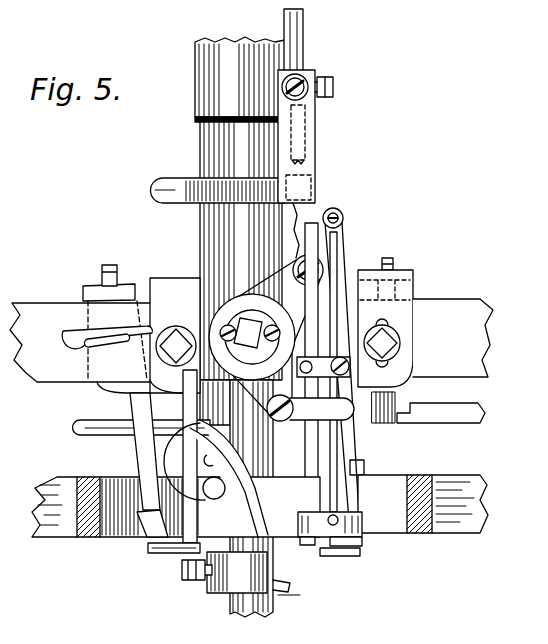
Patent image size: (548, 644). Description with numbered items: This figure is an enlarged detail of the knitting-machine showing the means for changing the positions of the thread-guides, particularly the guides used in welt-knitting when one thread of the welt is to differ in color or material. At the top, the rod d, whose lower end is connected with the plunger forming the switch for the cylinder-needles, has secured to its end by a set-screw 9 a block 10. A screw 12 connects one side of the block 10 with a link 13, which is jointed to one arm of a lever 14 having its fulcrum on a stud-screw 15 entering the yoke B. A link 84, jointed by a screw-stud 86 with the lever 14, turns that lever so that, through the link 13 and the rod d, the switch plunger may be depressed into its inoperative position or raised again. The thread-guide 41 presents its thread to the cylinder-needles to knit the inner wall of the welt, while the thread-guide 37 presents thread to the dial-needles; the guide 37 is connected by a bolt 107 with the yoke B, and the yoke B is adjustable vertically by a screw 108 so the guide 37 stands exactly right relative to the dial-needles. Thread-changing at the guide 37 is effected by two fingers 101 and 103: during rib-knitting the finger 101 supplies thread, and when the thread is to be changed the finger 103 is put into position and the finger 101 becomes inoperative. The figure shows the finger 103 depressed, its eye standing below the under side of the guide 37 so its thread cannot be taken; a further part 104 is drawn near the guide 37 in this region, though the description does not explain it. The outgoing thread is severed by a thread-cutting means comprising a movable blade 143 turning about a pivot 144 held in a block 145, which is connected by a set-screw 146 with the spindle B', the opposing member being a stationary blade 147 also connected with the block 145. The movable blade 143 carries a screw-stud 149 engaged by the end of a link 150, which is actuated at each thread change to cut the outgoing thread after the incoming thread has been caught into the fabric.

The rod d is at (305, 35).
The set-screw 9 is at (334, 86).
The block 10 is at (315, 78).
The screw 12 is at (303, 95).
The link 13 is at (308, 163).
The lever 14 is at (266, 334).
The stud-screw 15 is at (244, 318).
The thread-guide 37 is at (362, 540).
The thread-guide 41 is at (160, 538).
The link 84 is at (354, 418).
The screw-stud 86 is at (283, 421).
The finger 101 is at (346, 282).
The finger 103 is at (318, 473).
The bracket 104 is at (362, 556).
The bolt 107 is at (394, 345).
The screw 108 is at (394, 266).
The movable blade 143 is at (334, 561).
The pivot 144 is at (232, 564).
The block 145 is at (291, 586).
The set-screw 146 is at (182, 571).
The stationary blade 147 is at (253, 587).
The screw-stud 149 is at (237, 572).
The link 150 is at (104, 436).
The yoke B is at (458, 324).
The spindle B' is at (296, 605).